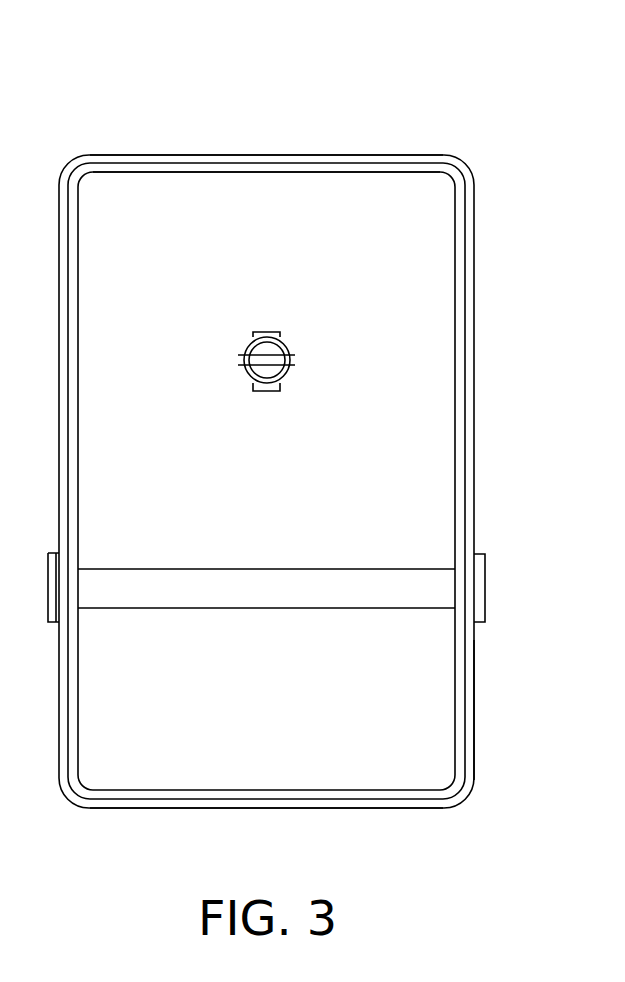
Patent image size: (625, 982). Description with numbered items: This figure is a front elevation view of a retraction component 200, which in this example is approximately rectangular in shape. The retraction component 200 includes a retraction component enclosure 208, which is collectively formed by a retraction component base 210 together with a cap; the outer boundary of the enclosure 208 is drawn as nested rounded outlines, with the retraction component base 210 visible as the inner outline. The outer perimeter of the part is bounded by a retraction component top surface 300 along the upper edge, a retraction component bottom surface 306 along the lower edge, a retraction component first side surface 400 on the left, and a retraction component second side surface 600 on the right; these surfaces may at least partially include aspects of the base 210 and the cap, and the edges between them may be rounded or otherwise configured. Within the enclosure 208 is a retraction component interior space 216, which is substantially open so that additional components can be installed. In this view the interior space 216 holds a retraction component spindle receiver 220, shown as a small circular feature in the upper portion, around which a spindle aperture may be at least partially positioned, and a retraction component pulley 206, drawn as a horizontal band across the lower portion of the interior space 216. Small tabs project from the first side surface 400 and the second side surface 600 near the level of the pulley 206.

The retraction component 200 is at (366, 113).
The retraction component pulley 206 is at (327, 578).
The retraction component enclosure 208 is at (475, 243).
The retraction component base 210 is at (438, 455).
The retraction component interior space 216 is at (182, 251).
The retraction component spindle receiver 220 is at (285, 345).
The retraction component top surface 300 is at (164, 155).
The retraction component bottom surface 306 is at (310, 808).
The retraction component first side surface 400 is at (59, 420).
The retraction component second side surface 600 is at (476, 705).